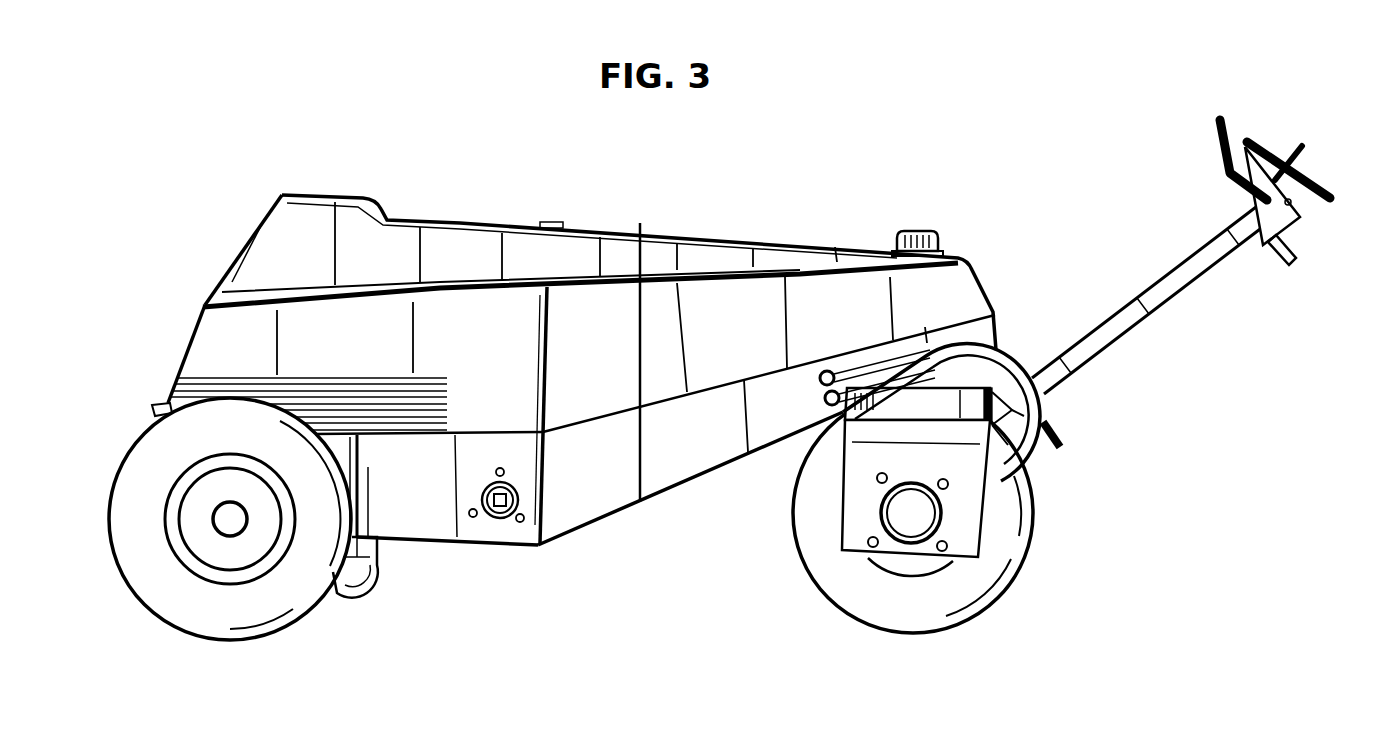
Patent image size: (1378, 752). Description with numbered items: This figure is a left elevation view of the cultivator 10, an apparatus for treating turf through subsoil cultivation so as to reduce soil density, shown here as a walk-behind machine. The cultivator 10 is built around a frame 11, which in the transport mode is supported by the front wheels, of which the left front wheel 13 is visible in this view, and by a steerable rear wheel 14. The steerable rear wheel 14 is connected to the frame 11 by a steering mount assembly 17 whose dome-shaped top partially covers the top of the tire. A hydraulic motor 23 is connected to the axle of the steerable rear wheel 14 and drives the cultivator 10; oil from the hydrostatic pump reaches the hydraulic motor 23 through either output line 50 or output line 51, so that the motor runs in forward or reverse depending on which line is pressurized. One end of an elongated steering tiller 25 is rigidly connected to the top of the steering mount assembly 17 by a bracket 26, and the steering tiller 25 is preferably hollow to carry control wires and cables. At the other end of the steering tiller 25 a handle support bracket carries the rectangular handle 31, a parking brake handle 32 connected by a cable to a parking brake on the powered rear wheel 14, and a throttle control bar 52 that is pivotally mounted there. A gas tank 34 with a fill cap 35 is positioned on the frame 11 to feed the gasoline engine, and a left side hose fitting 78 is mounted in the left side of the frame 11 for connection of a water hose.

The cultivator 10 is at (490, 187).
The frame 11 is at (678, 474).
The front wheel 13 is at (300, 618).
The steerable rear wheel 14 is at (827, 595).
The steering mount assembly 17 is at (888, 410).
The hydraulic motor 23 is at (897, 509).
The steering tiller 25 is at (1125, 301).
The bracket 26 is at (1046, 398).
The rectangular handle 31 is at (1328, 194).
The parking brake handle 32 is at (1218, 118).
The gas tank 34 is at (741, 245).
The fill cap 35 is at (918, 231).
The output line 50 is at (872, 362).
The output line 51 is at (900, 389).
The throttle control bar 52 is at (1300, 148).
The left side hose fitting 78 is at (498, 516).